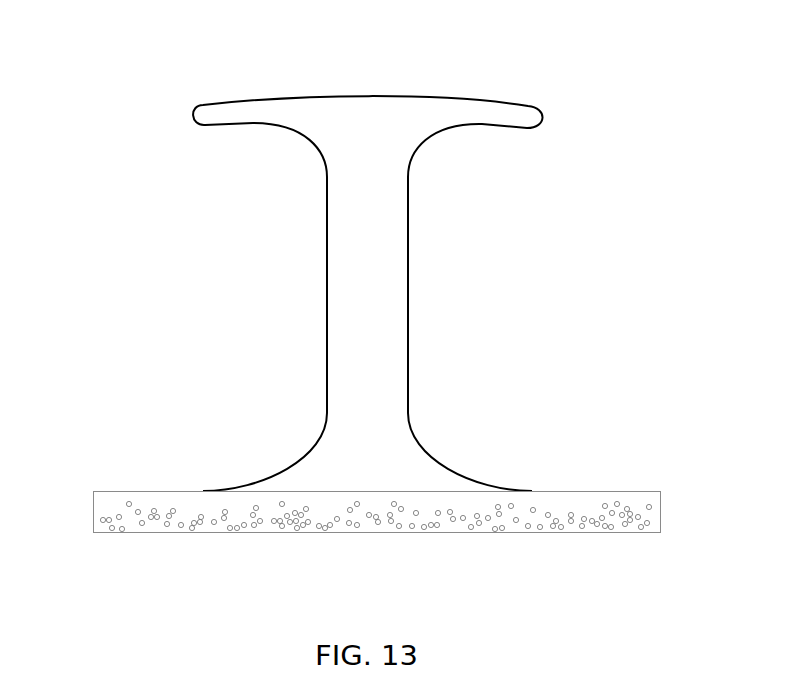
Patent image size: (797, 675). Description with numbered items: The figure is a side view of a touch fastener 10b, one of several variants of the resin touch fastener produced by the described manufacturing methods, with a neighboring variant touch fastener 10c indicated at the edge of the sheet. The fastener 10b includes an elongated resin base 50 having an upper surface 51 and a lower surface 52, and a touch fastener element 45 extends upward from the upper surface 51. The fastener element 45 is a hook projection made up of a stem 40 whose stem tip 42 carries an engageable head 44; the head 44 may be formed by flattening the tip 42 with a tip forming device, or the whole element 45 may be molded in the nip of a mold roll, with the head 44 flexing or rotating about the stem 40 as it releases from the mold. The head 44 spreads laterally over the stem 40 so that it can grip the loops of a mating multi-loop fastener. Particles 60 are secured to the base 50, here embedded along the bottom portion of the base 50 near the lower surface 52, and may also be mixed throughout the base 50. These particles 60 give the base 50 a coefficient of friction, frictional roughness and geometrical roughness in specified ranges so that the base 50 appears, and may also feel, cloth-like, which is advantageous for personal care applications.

The touch fastener 10b is at (158, 42).
The touch fastener 10c is at (81, 674).
The stem 40 is at (407, 289).
The stem tip 42 is at (130, 87).
The engageable head 44 is at (383, 106).
The touch fastener element 45 is at (51, 85).
The elongated resin base 50 is at (660, 491).
The upper surface of the base 51 is at (143, 477).
The lower surface of the base 52 is at (162, 557).
The particles 60 is at (432, 532).